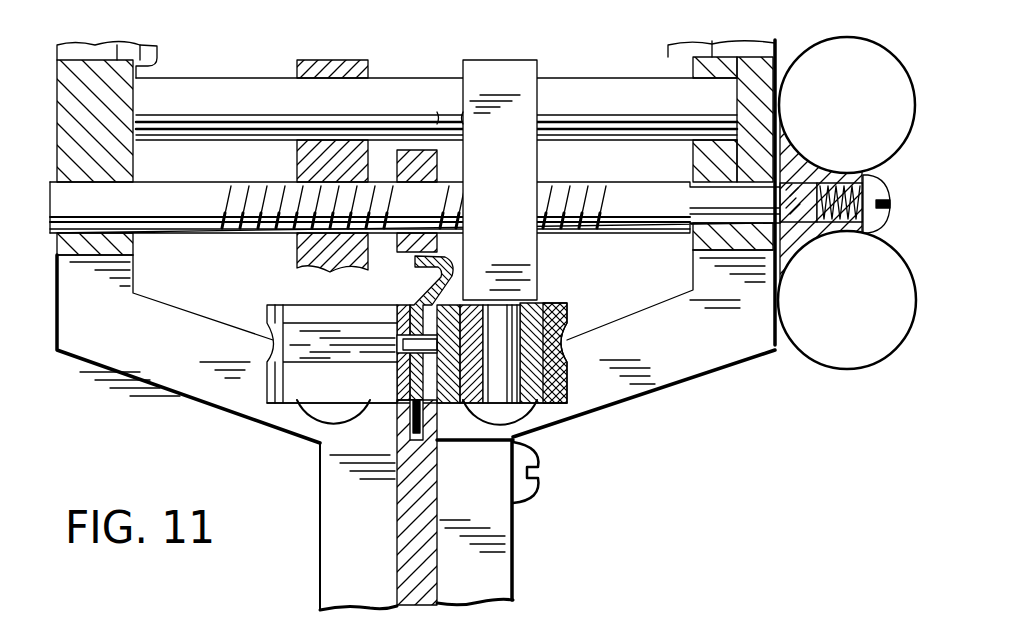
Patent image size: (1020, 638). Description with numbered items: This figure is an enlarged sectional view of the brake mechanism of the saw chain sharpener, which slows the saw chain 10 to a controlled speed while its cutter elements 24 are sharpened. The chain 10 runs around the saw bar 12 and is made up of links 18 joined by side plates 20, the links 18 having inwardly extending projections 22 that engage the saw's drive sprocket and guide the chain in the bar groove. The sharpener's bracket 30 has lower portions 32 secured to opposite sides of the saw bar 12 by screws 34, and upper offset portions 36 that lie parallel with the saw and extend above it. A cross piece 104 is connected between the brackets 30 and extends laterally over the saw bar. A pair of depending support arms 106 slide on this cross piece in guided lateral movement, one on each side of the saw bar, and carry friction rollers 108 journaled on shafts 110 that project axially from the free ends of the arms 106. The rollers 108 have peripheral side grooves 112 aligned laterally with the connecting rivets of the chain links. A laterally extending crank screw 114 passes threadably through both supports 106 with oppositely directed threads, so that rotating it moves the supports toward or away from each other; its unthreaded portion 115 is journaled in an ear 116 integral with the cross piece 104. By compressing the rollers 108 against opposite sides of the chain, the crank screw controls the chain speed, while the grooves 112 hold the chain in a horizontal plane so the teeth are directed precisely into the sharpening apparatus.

The saw chain 10 is at (400, 352).
The saw bar 12 is at (420, 597).
The links 18 is at (397, 362).
The side plates 20 is at (403, 306).
The inwardly extending projections 22 is at (420, 427).
The cutter elements 24 is at (417, 260).
The bracket 30 is at (178, 395).
The lower portions 32 is at (337, 580).
The screws 34 is at (527, 487).
The upper offset portions 36 is at (117, 100).
The cross piece 104 is at (615, 80).
The depending support arms 106 is at (307, 67).
The friction rollers 108 is at (300, 402).
The shafts 110 is at (305, 415).
The peripheral side grooves 112 is at (270, 337).
The crank screw 114 is at (643, 192).
The unthreaded portion 115 is at (413, 200).
The ear 116 is at (440, 167).